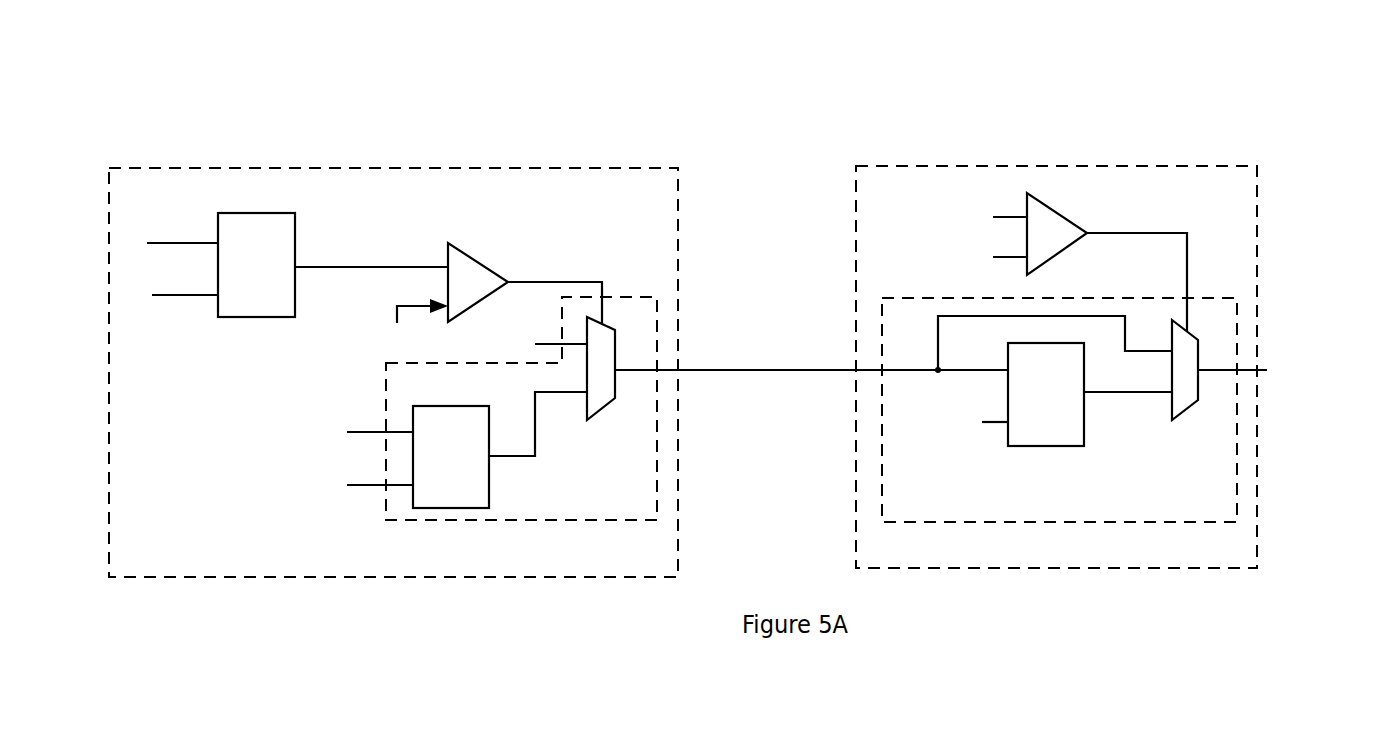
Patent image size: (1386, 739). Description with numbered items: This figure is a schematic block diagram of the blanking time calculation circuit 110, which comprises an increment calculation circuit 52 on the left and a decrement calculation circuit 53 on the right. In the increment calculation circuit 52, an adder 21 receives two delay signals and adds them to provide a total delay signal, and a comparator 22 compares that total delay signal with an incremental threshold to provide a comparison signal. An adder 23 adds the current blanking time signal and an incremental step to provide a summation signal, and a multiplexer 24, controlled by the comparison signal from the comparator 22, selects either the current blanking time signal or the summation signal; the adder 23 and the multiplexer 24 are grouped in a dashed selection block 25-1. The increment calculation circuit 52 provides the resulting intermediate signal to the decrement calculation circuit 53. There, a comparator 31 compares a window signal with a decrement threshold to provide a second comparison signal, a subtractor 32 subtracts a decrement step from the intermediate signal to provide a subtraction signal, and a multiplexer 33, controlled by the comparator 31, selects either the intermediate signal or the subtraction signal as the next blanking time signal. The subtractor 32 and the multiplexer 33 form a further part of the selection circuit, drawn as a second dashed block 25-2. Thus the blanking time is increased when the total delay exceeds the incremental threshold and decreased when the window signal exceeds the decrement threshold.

The blanking time calculation circuit 110 is at (1198, 72).
The increment calculation circuit 52 is at (668, 167).
The decrement calculation circuit 53 is at (1210, 167).
The adder 21 is at (289, 214).
The comparator 22 is at (470, 257).
The adder 23 is at (462, 406).
The multiplexer 24 is at (626, 330).
The first selection unit 25-1 is at (477, 521).
The second selection unit 25-2 is at (1028, 523).
The comparator 31 is at (1052, 206).
The subtractor 32 is at (1060, 343).
The multiplexer 33 is at (1176, 418).